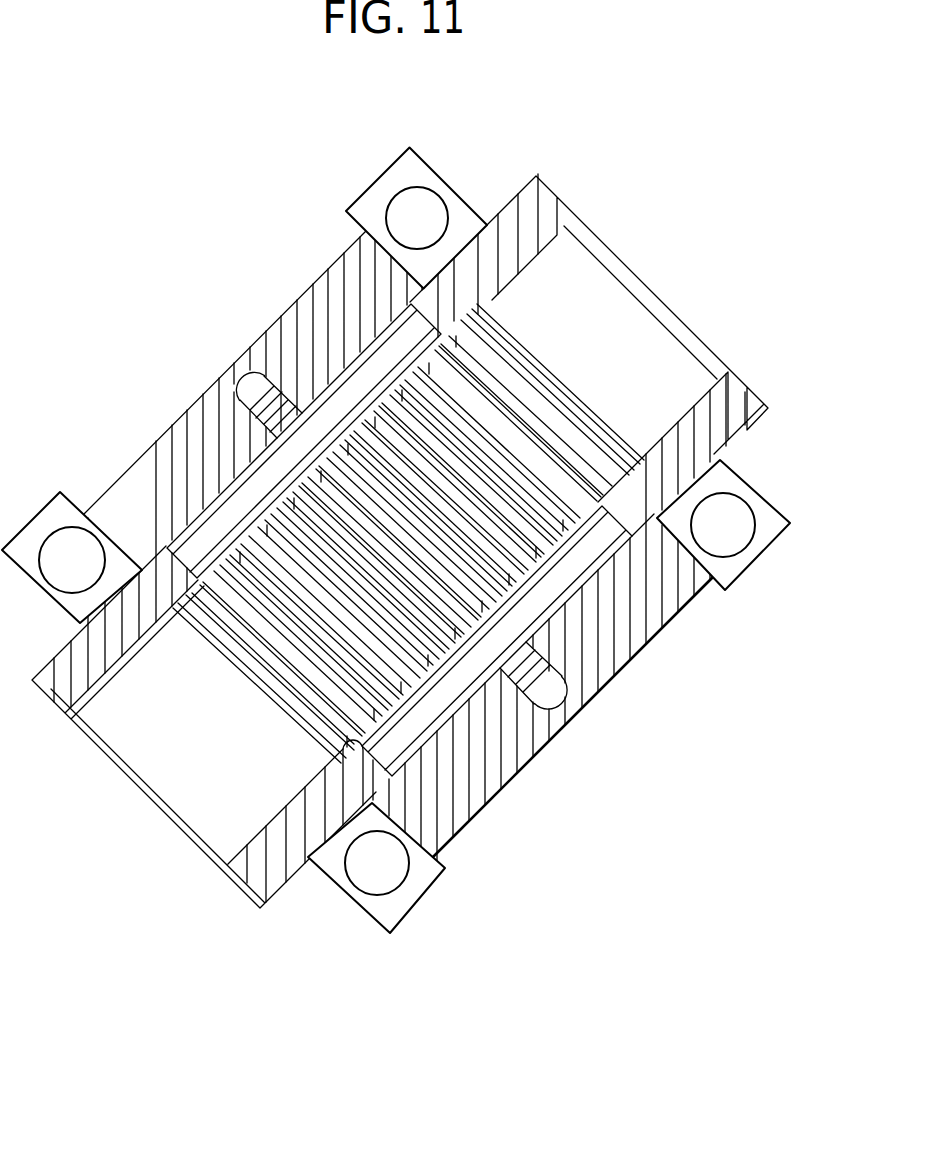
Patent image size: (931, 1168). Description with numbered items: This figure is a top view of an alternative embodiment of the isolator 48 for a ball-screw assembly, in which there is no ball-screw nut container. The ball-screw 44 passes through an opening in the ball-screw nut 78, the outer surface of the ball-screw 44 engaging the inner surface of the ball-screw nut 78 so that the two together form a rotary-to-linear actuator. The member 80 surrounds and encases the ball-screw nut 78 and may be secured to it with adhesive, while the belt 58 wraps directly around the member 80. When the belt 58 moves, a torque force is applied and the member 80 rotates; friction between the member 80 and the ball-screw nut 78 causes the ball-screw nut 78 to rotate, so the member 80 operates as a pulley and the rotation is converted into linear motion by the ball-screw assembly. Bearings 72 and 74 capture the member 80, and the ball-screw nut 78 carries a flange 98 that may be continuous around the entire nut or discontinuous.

The isolator 48 is at (207, 291).
The belt 58 is at (652, 641).
The ball-screw nut 78 is at (381, 375).
The ball-screw 44 is at (457, 470).
The member 80 is at (195, 433).
The flange 98 is at (557, 699).
The bearing 72 is at (398, 903).
The bearing 74 is at (764, 529).